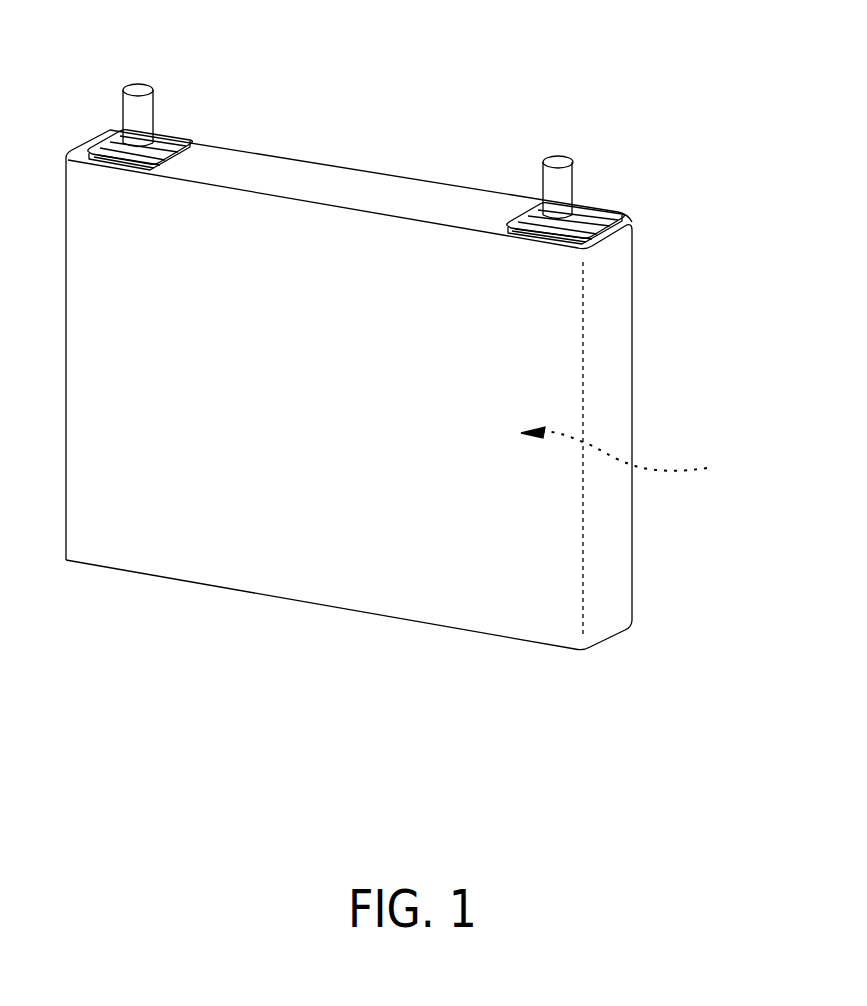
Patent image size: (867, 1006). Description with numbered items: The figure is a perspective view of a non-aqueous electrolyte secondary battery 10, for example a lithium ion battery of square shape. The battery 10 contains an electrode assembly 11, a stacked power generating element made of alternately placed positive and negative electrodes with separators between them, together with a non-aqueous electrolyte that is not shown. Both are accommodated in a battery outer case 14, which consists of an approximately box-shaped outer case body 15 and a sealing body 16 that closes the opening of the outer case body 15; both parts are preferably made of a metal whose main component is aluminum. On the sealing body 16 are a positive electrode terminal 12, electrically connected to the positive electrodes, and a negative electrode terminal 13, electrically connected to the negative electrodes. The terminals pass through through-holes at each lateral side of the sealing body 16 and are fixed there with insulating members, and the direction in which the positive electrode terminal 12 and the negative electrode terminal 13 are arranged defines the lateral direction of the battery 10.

The non-aqueous electrolyte secondary battery 10 is at (660, 62).
The electrode assembly 11 is at (633, 451).
The positive electrode terminal 12 is at (143, 85).
The negative electrode terminal 13 is at (558, 157).
The battery outer case 14 is at (722, 253).
The outer case body 15 is at (616, 354).
The sealing body 16 is at (628, 218).